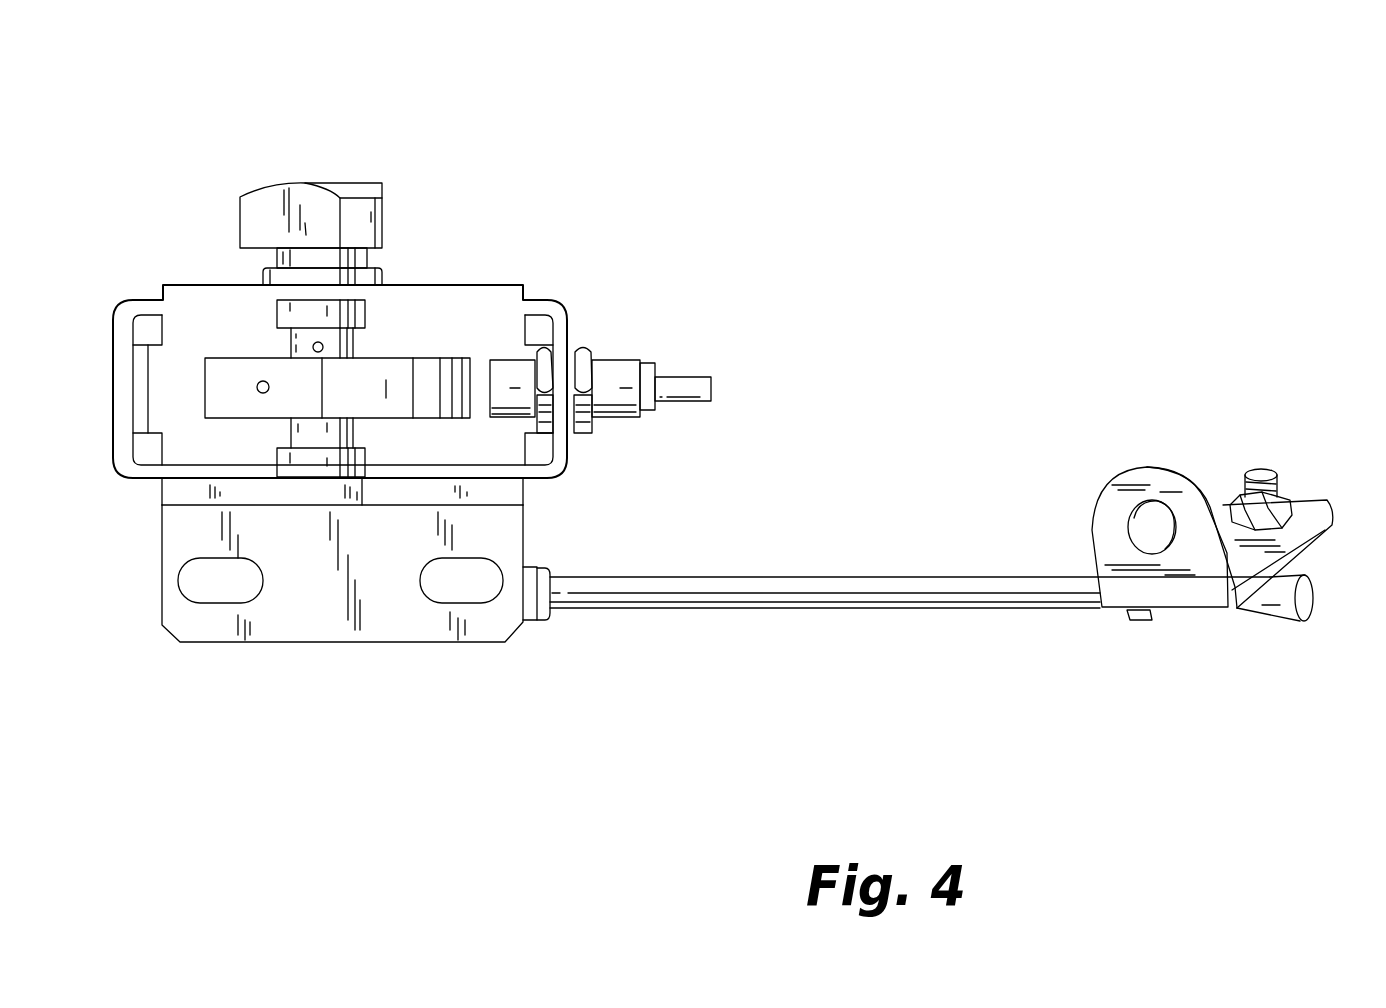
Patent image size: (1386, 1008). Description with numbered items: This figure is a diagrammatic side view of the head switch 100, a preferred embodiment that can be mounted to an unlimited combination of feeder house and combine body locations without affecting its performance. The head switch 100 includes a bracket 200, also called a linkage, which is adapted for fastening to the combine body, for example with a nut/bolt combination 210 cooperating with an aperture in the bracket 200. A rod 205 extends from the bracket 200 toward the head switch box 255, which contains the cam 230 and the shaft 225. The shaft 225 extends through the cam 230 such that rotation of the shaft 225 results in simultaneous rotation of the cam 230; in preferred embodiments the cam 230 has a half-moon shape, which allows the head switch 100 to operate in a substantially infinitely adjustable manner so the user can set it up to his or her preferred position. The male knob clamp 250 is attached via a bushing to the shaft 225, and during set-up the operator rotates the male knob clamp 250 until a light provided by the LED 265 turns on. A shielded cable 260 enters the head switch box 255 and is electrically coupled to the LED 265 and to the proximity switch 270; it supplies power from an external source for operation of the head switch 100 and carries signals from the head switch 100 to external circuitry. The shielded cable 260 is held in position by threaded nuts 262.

The head switch 100 is at (292, 142).
The bracket 200 is at (1150, 468).
The rod 205 is at (807, 608).
The nut/bolt combination 210 is at (1287, 497).
The shaft 225 is at (366, 345).
The cam 230 is at (407, 402).
The male knob clamp 250 is at (381, 214).
The head switch box 255 is at (362, 640).
The shielded cable 260 is at (697, 377).
The threaded nuts 262 is at (580, 350).
The light emitting diode 265 is at (643, 417).
The proximity switch 270 is at (511, 358).